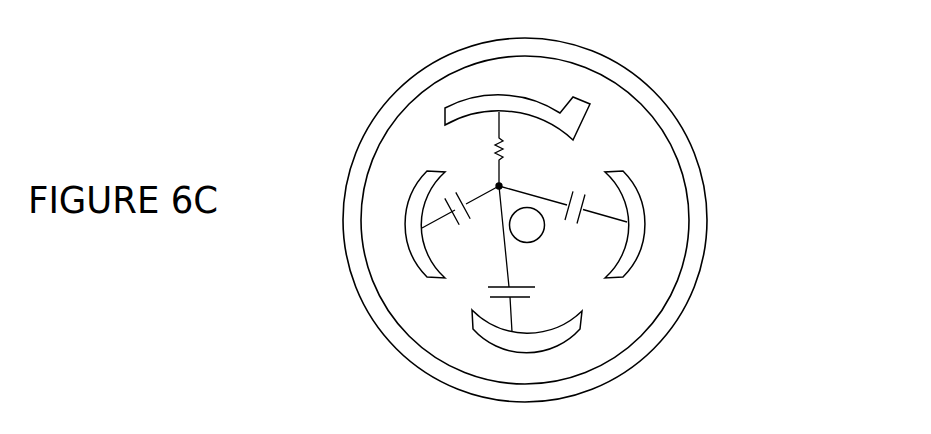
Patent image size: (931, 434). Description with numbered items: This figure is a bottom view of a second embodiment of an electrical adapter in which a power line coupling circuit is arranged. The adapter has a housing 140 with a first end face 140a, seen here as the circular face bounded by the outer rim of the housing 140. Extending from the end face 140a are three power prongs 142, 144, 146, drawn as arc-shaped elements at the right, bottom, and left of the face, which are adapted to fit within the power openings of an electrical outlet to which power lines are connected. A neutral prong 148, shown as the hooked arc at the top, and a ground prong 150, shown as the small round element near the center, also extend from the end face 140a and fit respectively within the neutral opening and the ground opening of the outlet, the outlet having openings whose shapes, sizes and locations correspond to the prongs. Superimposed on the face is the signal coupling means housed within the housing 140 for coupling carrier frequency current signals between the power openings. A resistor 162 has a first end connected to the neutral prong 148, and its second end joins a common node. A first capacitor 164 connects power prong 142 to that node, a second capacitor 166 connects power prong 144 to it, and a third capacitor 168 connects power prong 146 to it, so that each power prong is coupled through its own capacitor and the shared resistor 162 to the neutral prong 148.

The housing 140 is at (676, 330).
The first end face 140a is at (610, 117).
The power prong 142 is at (645, 208).
The power prong 144 is at (535, 352).
The power prong 146 is at (398, 223).
The neutral prong 148 is at (527, 98).
The ground prong 150 is at (527, 207).
The resistor 162 is at (509, 148).
The first capacitor 164 is at (578, 220).
The second capacitor 166 is at (500, 286).
The third capacitor 168 is at (458, 195).